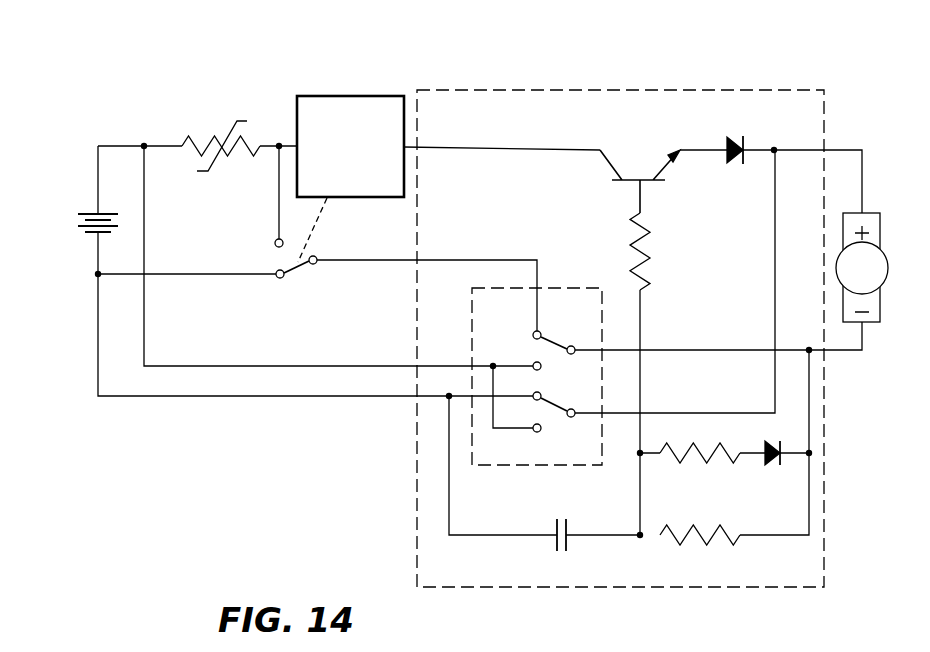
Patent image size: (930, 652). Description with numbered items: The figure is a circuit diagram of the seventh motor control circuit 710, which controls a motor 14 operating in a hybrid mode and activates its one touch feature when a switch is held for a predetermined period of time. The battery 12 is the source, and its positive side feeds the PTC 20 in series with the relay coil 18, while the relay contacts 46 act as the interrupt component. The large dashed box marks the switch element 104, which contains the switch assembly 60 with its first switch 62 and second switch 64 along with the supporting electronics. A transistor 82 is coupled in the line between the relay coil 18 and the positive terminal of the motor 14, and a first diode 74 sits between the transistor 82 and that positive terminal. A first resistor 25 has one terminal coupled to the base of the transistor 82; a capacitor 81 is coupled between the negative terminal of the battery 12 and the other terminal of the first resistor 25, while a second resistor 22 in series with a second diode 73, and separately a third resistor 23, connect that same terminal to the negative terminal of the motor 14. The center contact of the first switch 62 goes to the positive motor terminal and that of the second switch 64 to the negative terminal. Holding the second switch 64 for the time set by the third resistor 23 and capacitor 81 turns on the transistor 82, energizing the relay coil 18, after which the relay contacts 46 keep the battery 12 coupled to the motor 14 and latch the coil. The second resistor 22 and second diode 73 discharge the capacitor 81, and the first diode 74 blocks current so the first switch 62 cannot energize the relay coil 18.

The seventh motor control circuit 710 is at (135, 103).
The battery 12 is at (86, 212).
The PTC 20 is at (235, 152).
The relay coil 18 is at (340, 187).
The relay contacts 46 is at (286, 268).
The switch element 104 is at (498, 125).
The switch assembly 60 is at (518, 321).
The second switch 64 is at (548, 340).
The first switch 62 is at (552, 403).
The transistor 82 is at (648, 178).
The first resistor 25 is at (655, 240).
The first diode 74 is at (735, 141).
The motor 14 is at (850, 282).
The second resistor 22 is at (697, 458).
The second diode 73 is at (772, 468).
The third resistor 23 is at (685, 545).
The capacitor 81 is at (556, 544).